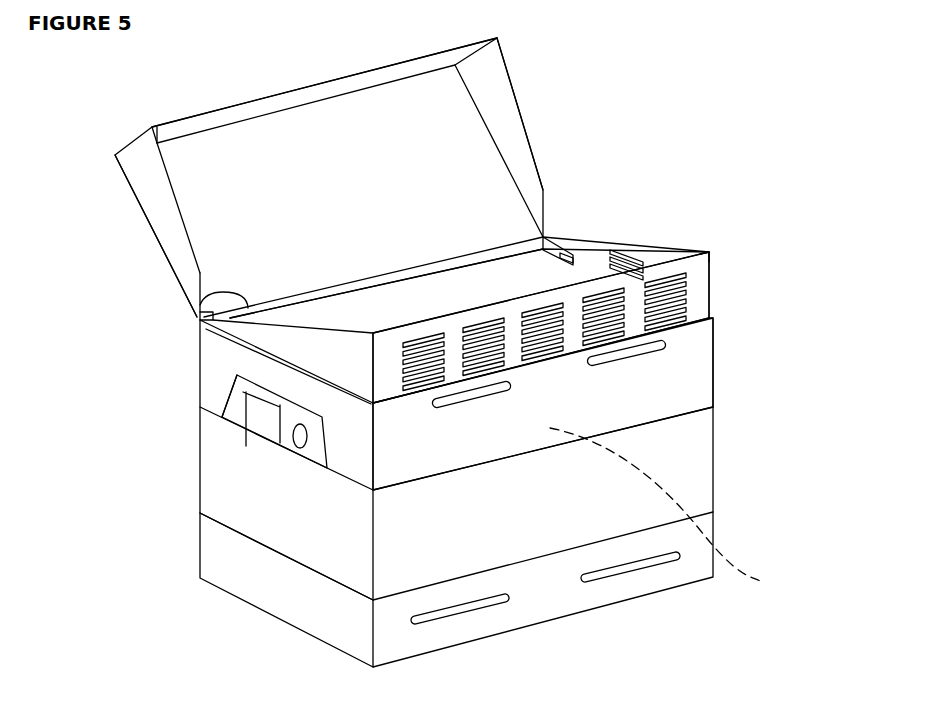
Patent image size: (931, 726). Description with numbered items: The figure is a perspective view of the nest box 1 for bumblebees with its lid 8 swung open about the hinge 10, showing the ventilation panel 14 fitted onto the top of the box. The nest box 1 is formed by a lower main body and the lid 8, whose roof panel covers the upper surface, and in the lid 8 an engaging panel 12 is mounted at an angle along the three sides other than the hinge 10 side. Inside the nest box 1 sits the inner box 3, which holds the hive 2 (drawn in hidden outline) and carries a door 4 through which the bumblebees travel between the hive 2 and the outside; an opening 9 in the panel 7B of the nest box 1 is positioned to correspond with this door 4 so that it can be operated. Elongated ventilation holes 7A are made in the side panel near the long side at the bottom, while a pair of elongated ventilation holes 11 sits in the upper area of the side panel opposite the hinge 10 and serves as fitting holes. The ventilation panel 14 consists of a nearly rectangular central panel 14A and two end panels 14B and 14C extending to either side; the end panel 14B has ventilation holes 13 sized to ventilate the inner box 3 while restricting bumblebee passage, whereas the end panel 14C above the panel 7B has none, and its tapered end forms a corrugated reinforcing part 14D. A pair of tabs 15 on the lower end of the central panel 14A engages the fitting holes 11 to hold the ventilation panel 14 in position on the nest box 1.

The nest box 1 is at (742, 327).
The hive 2 is at (665, 508).
The inner box 3 is at (497, 270).
The door 4 is at (297, 437).
The elongated ventilation holes 7A is at (490, 602).
The panel 7B is at (278, 533).
The lid 8 is at (412, 148).
The opening 9 is at (222, 416).
The hinge 10 is at (222, 296).
The elongated ventilation holes 11 is at (655, 360).
The engaging panel 12 is at (220, 123).
The ventilation holes 13 is at (607, 332).
The ventilation panel 14 is at (648, 227).
The central panel 14A is at (647, 275).
The end panel 14B is at (585, 260).
The end panel 14C is at (247, 333).
The reinforcing part 14D is at (558, 237).
The tabs 15 is at (612, 363).